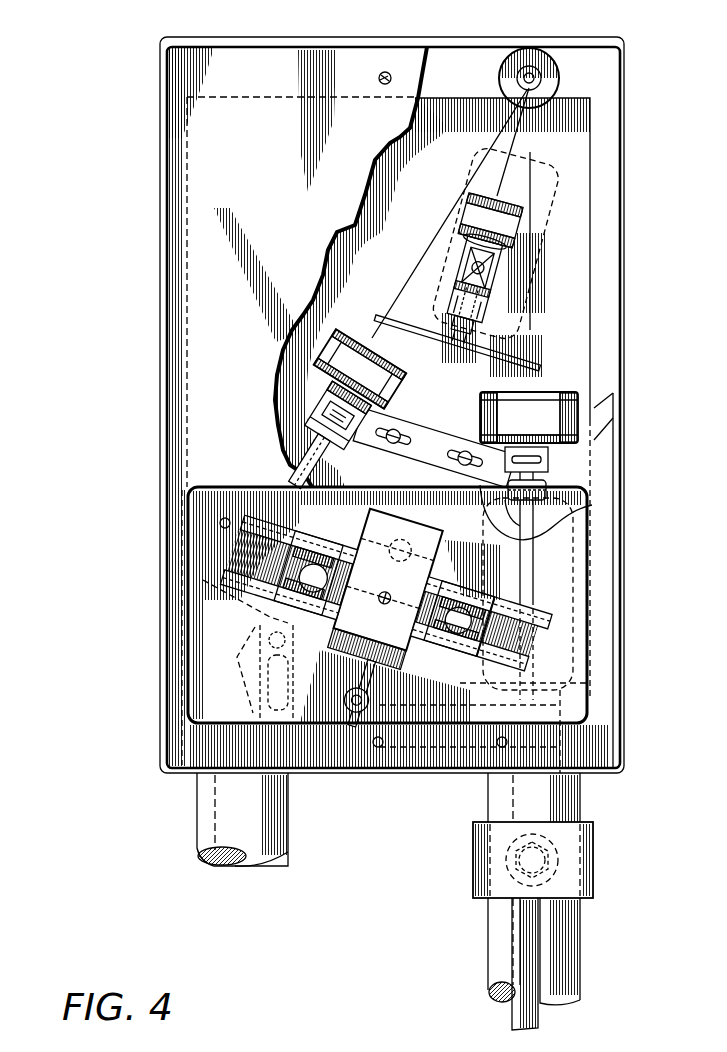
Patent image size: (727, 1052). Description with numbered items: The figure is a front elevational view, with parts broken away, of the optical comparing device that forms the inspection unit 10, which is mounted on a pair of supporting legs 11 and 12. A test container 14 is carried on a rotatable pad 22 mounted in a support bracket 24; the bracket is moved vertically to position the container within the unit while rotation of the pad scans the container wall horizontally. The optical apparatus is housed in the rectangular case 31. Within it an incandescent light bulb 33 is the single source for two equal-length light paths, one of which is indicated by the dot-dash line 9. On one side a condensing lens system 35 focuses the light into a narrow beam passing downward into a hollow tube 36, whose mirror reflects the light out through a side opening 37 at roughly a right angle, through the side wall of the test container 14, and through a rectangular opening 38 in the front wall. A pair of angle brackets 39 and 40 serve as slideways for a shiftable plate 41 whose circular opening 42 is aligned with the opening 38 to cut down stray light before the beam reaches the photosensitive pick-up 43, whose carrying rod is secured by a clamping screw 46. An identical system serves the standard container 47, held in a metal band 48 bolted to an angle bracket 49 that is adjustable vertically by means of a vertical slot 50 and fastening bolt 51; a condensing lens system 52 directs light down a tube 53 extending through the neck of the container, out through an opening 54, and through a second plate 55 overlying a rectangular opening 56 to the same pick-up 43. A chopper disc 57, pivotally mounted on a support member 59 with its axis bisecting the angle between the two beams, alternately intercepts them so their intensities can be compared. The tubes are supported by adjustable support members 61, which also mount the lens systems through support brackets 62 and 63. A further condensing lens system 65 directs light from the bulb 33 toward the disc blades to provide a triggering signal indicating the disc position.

The dot-dash line 9 is at (533, 218).
The inspection unit 10 is at (172, 795).
The supporting leg 11 is at (577, 793).
The supporting leg 12 is at (250, 840).
The test container 14 is at (560, 525).
The pad 22 is at (593, 700).
The support bracket 24 is at (580, 860).
The rectangular case 31 is at (455, 50).
The incandescent light bulb 33 is at (531, 76).
The condensing lens system 35 is at (580, 414).
The hollow tube 36 is at (546, 490).
The opening 37 is at (520, 647).
The rectangular opening 38 is at (447, 588).
The angle bracket 39 is at (545, 610).
The angle bracket 40 is at (528, 680).
The shiftable plate 41 is at (490, 618).
The circular opening 42 is at (470, 592).
The photosensitive pick-up 43 is at (368, 583).
The clamping screw 46 is at (345, 718).
The standard container 47 is at (303, 484).
The metal band 48 is at (245, 646).
The angle bracket 49 is at (258, 703).
The vertical slot 50 is at (292, 663).
The fastening bolt 51 is at (296, 690).
The condensing lens system 52 is at (348, 353).
The tube 53 is at (385, 468).
The opening 54 is at (307, 545).
The second plate 55 is at (322, 553).
The rectangular opening 56 is at (338, 624).
The chopper disc 57 is at (406, 320).
The support member 59 is at (483, 298).
The support member 61 is at (556, 476).
The support bracket 62 is at (549, 466).
The support bracket 63 is at (332, 410).
The condensing lens system 65 is at (482, 207).